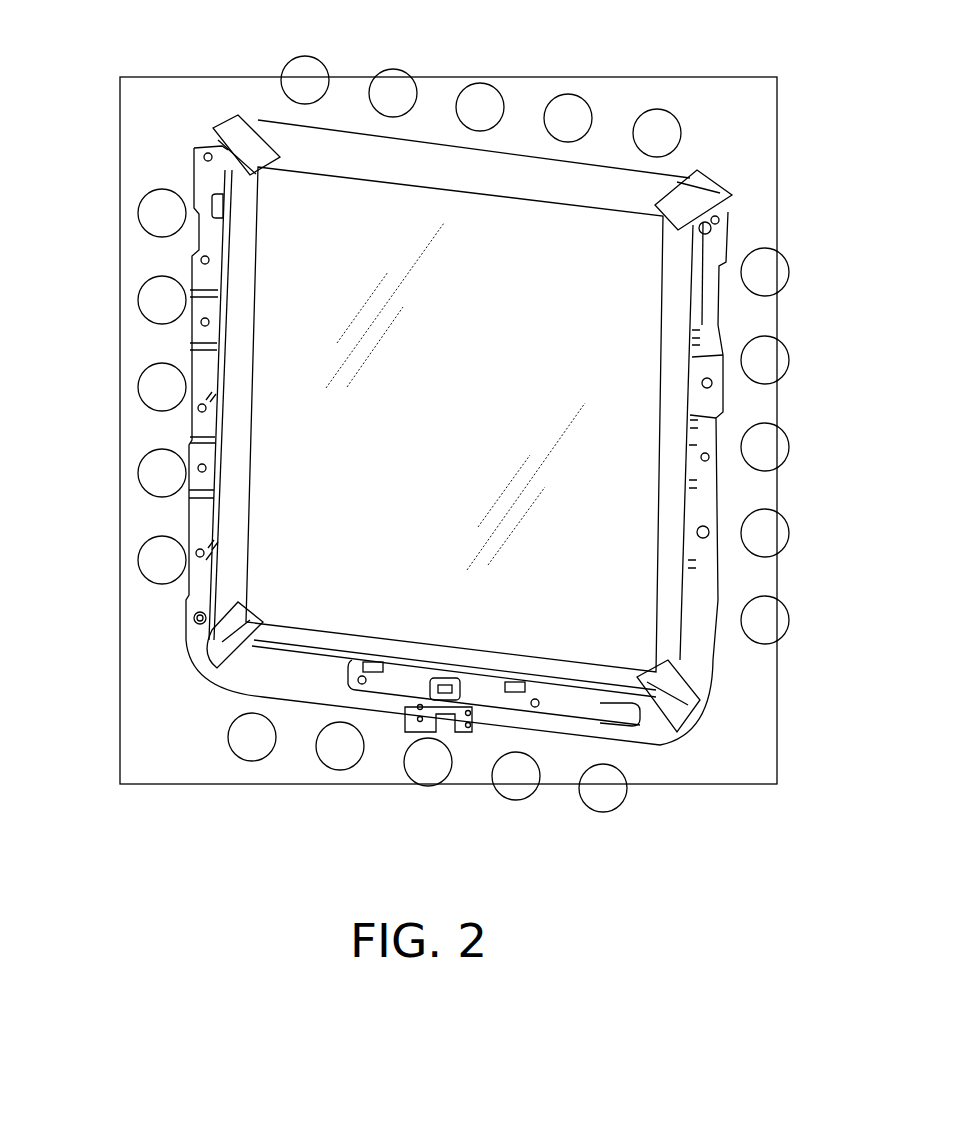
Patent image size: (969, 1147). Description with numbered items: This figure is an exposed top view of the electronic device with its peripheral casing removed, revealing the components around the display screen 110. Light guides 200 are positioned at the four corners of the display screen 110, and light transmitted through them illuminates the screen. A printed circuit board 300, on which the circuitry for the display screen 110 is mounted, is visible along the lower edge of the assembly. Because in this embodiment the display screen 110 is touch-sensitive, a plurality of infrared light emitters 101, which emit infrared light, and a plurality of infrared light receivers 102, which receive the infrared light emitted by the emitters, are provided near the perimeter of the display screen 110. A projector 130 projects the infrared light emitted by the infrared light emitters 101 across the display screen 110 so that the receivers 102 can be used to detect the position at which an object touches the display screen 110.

The infrared light emitters 101 is at (498, 84).
The infrared light receivers 102 is at (137, 387).
The display screen 110 is at (278, 330).
The projector 130 is at (357, 155).
The light guides 200 is at (238, 125).
The printed circuit board 300 is at (395, 687).